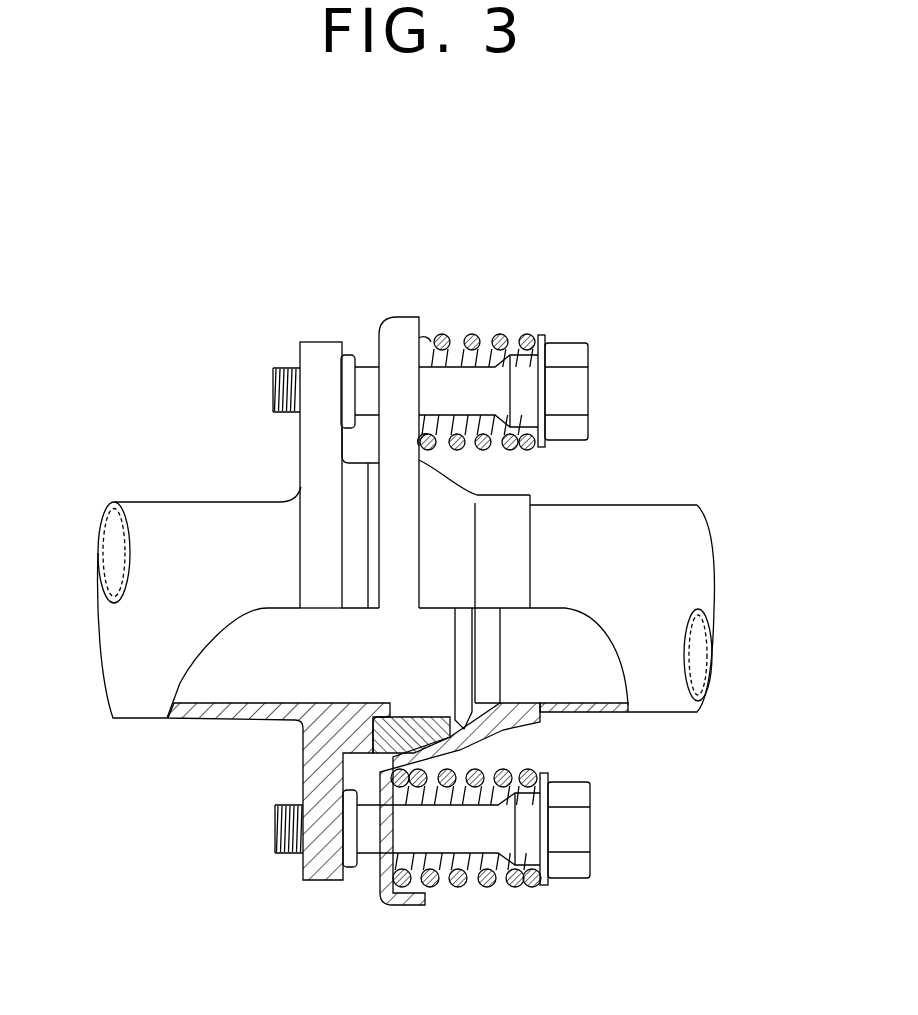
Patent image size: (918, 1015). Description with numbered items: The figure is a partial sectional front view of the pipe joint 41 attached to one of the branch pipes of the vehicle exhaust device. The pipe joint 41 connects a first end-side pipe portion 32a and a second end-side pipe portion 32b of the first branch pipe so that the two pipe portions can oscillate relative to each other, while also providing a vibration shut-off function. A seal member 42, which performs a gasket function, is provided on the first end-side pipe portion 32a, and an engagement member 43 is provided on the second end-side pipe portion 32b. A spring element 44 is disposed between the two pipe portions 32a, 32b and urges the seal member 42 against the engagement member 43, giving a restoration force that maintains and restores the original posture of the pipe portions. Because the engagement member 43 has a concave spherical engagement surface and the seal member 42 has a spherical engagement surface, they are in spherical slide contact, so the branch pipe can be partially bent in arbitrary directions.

The first end-side pipe portion 32a is at (168, 500).
The second end-side pipe portion 32b is at (660, 512).
The pipe joint 41 is at (481, 279).
The seal member 42 is at (415, 725).
The engagement member 43 is at (458, 738).
The spring element 44 is at (503, 333).